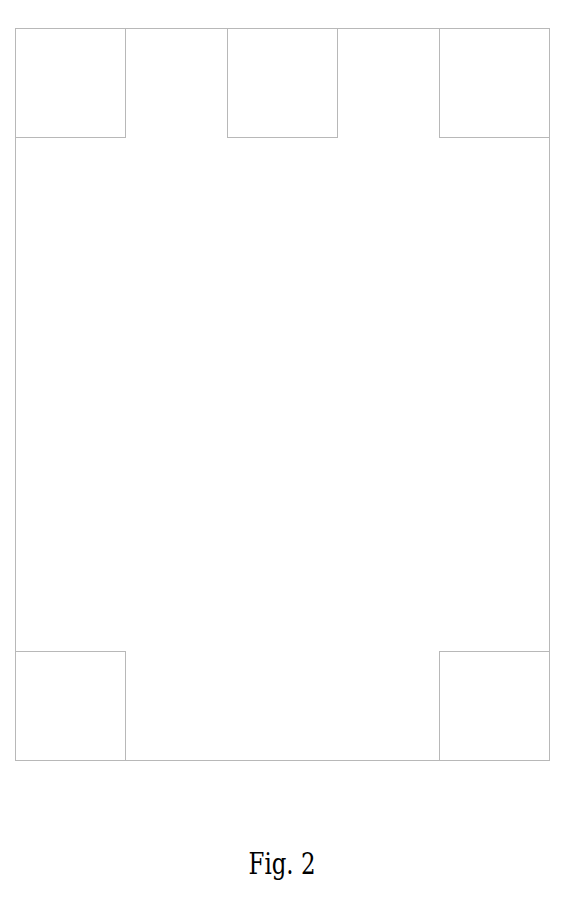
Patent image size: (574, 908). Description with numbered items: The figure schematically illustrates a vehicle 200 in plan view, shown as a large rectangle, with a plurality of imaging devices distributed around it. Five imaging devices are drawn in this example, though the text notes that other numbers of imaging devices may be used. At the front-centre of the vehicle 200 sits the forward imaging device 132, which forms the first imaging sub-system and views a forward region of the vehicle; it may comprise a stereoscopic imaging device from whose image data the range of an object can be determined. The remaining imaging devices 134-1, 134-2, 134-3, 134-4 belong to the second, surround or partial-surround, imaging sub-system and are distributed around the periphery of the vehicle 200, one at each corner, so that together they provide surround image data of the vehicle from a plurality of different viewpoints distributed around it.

The vehicle 200 is at (283, 395).
The forward imaging device 132 is at (283, 83).
The imaging device 134-1 is at (71, 83).
The imaging device 134-2 is at (495, 83).
The imaging device 134-3 is at (71, 706).
The imaging device 134-4 is at (495, 706).